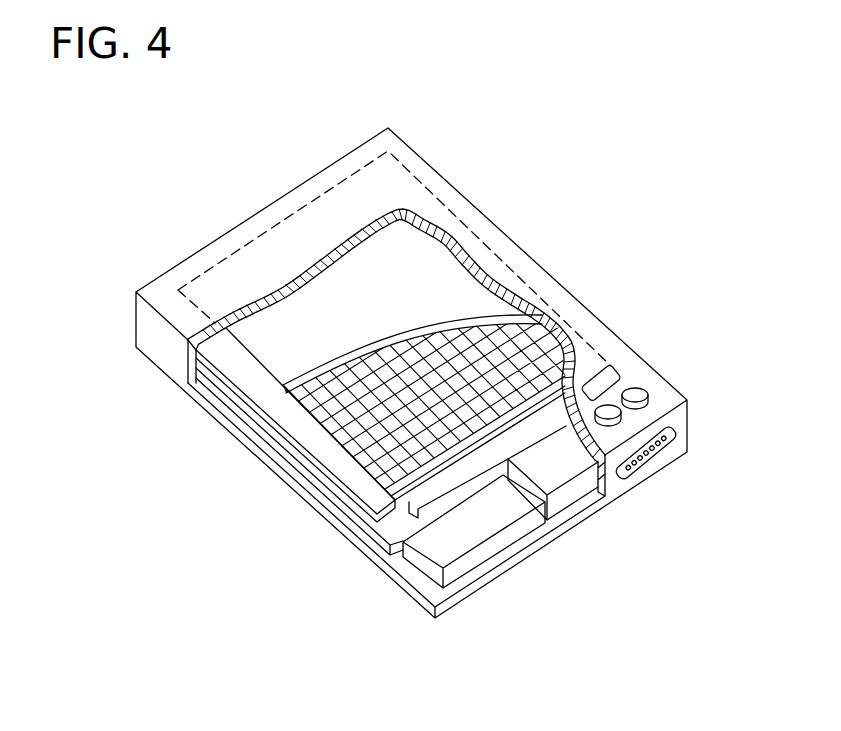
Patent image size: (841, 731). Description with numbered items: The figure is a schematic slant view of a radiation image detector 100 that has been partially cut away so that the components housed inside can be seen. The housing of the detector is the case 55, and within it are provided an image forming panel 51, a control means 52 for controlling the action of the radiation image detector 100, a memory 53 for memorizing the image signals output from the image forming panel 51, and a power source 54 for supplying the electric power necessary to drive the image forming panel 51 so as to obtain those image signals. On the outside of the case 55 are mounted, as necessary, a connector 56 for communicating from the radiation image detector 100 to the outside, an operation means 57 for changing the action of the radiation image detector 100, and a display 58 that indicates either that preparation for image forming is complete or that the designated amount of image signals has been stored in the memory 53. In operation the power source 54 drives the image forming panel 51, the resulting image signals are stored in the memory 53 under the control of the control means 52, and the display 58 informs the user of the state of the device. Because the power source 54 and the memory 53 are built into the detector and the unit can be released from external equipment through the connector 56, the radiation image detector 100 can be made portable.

The radiation image detector 100 is at (546, 198).
The image forming panel 51 is at (247, 362).
The control means 52 is at (584, 493).
The memory 53 is at (517, 538).
The power source 54 is at (303, 463).
The case 55 is at (434, 168).
The connector 56 is at (658, 450).
The operation means 57 is at (641, 389).
The display 58 is at (610, 376).